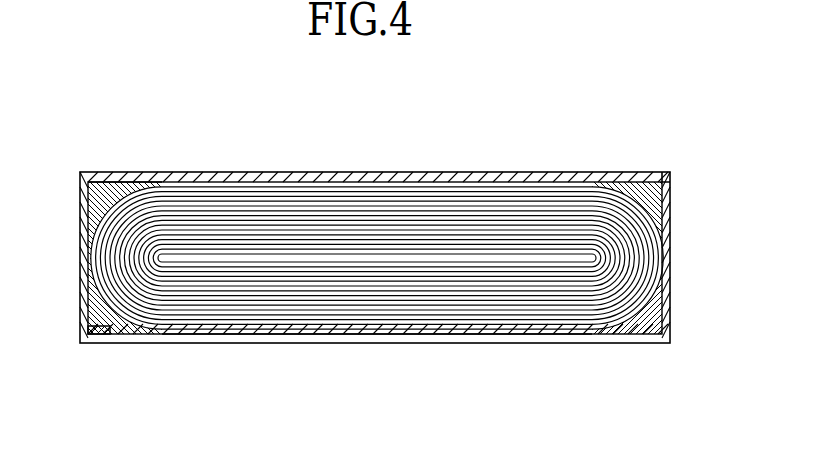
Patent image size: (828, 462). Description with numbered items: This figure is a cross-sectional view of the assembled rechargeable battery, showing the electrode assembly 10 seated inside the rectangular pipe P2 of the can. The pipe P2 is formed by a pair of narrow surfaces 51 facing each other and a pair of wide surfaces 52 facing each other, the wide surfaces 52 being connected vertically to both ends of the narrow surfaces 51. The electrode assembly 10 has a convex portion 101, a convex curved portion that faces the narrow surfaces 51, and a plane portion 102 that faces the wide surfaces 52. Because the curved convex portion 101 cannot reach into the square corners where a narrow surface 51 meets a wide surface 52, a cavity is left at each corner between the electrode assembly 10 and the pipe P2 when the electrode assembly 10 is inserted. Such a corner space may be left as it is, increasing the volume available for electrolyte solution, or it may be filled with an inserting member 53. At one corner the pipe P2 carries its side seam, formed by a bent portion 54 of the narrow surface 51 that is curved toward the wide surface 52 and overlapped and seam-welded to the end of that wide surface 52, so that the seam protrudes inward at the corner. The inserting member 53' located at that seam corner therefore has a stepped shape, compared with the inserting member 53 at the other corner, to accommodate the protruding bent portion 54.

The electrode assembly 10 is at (475, 322).
The narrow surfaces 51 is at (85, 237).
The wide surfaces 52 is at (423, 177).
The inserting member 53 is at (125, 188).
The inserting member 53' is at (125, 329).
The bent portion 54 is at (95, 334).
The convex portion 101 is at (119, 181).
The plane portion 102 is at (352, 345).
The pipe P2 is at (677, 164).